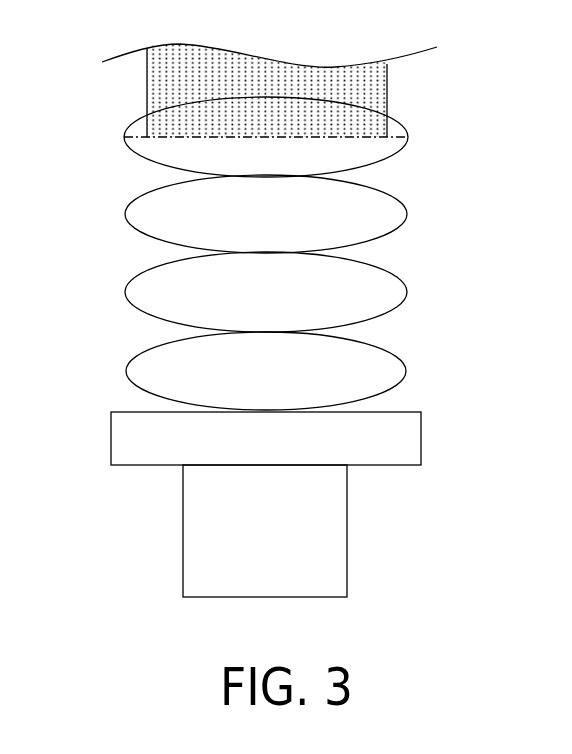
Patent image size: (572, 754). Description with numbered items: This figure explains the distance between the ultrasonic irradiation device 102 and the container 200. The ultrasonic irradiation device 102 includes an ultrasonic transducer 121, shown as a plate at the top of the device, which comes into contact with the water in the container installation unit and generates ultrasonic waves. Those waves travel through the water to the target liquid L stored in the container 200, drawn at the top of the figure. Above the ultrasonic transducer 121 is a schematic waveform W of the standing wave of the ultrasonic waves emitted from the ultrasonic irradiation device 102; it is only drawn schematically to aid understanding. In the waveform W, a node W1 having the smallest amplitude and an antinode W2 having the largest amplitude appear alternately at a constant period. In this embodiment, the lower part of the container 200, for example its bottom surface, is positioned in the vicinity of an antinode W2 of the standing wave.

The container 200 is at (387, 97).
The target liquid L is at (147, 97).
The waveform W is at (407, 213).
The antinode W2 is at (406, 291).
The node W1 is at (263, 333).
The ultrasonic transducer 121 is at (111, 444).
The ultrasonic irradiation device 102 is at (347, 540).